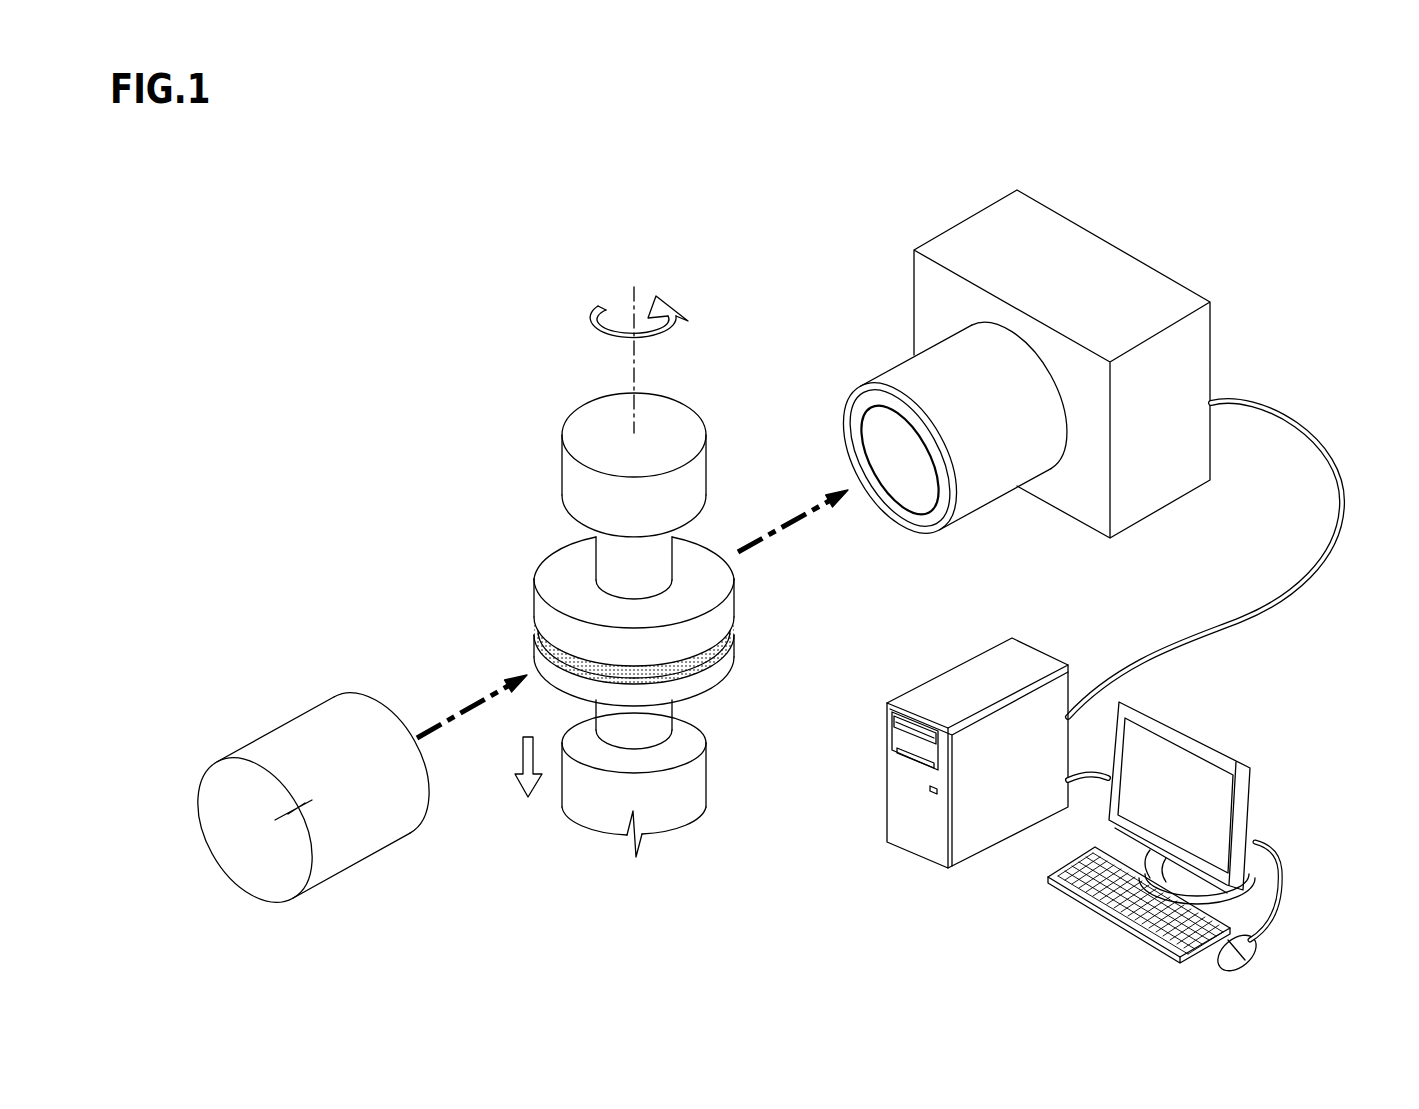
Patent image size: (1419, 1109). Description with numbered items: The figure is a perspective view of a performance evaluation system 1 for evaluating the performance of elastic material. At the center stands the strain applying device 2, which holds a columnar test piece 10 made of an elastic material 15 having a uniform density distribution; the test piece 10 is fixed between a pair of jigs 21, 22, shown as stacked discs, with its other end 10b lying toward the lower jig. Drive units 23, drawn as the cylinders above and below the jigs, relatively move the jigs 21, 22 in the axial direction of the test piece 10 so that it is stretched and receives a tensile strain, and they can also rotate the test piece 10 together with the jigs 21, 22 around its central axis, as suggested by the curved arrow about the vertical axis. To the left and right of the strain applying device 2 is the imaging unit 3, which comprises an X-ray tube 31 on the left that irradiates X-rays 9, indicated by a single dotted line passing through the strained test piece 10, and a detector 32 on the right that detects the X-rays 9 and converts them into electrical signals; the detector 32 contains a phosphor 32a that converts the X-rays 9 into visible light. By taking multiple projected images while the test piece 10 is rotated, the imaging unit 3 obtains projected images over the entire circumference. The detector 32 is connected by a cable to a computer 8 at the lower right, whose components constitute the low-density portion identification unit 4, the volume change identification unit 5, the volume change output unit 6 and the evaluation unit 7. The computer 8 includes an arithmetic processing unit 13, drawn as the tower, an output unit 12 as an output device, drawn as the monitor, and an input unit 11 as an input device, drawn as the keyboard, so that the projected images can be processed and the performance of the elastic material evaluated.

The performance evaluation system 1 is at (739, 305).
The strain applying device 2 is at (408, 445).
The imaging unit 3 is at (782, 584).
The X-ray tube 31 is at (362, 820).
The detector 32 is at (1197, 235).
The phosphor 32a is at (883, 440).
The X-rays 9 is at (817, 490).
The drive units 23 is at (575, 485).
The jig 21 is at (563, 572).
The jig 22 is at (543, 662).
The test piece 10 is at (673, 662).
The elastic material 15 is at (634, 654).
The other end 10b is at (650, 678).
The low-density portion identification unit 4 is at (930, 660).
The volume change identification unit 5 is at (956, 648).
The volume change output unit 6 is at (989, 633).
The evaluation unit 7 is at (1020, 630).
The computer 8 is at (1046, 558).
The arithmetic processing unit 13 is at (925, 830).
The output unit 12 is at (1113, 808).
The input unit 11 is at (1062, 895).